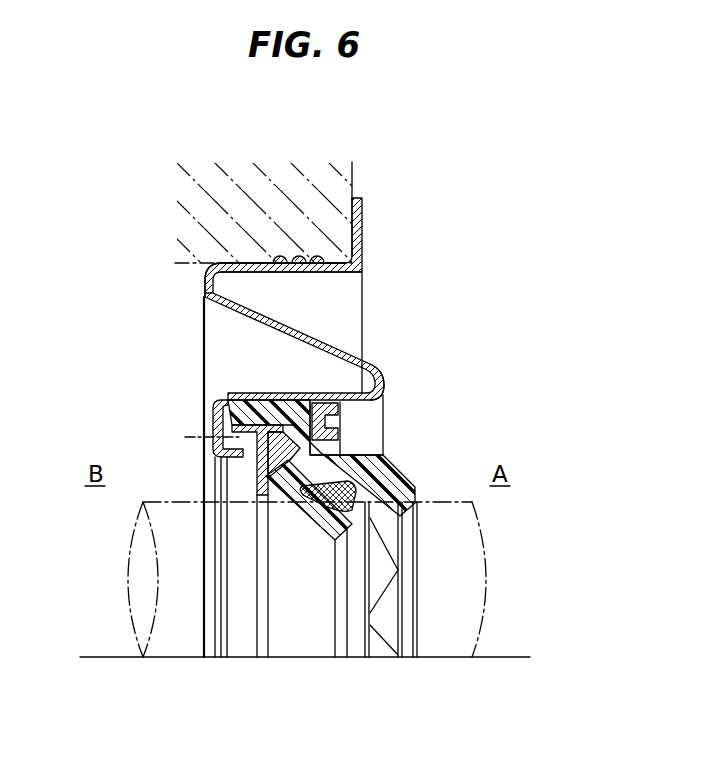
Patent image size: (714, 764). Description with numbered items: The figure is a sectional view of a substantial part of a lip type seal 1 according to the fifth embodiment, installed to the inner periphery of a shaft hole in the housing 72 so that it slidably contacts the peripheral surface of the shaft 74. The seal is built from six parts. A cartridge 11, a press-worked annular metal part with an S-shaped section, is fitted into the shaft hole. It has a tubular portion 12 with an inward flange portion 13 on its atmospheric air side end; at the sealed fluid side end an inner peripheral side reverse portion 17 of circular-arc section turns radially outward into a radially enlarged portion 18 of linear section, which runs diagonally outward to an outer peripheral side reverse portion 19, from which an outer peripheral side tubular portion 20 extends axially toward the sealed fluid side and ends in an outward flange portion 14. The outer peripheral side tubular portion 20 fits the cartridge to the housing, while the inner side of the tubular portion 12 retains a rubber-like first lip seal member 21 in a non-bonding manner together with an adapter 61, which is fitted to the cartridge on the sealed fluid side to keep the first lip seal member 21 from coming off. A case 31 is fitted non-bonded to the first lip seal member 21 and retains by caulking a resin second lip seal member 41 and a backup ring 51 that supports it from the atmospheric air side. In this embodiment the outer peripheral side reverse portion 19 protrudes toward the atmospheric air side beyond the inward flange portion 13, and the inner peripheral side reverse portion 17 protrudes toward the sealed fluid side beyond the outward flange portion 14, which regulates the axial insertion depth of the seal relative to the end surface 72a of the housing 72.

The lip type seal 1 is at (395, 407).
The cartridge 11 is at (374, 266).
The tubular portion 12 is at (297, 400).
The inward flange portion 13 is at (228, 428).
The outward flange portion 14 is at (365, 218).
The inner peripheral side reverse portion 17 is at (396, 408).
The radially enlarged portion 18 is at (300, 322).
The outer peripheral side reverse portion 19 is at (205, 293).
The outer peripheral side tubular portion 20 is at (245, 263).
The first lip seal member 21 is at (233, 397).
The case 31 is at (211, 430).
The second lip seal member 41 is at (310, 532).
The backup ring 51 is at (248, 473).
The adapter 61 is at (355, 417).
The housing 72 is at (315, 176).
The end surface 72a is at (355, 185).
The shaft 74 is at (440, 652).